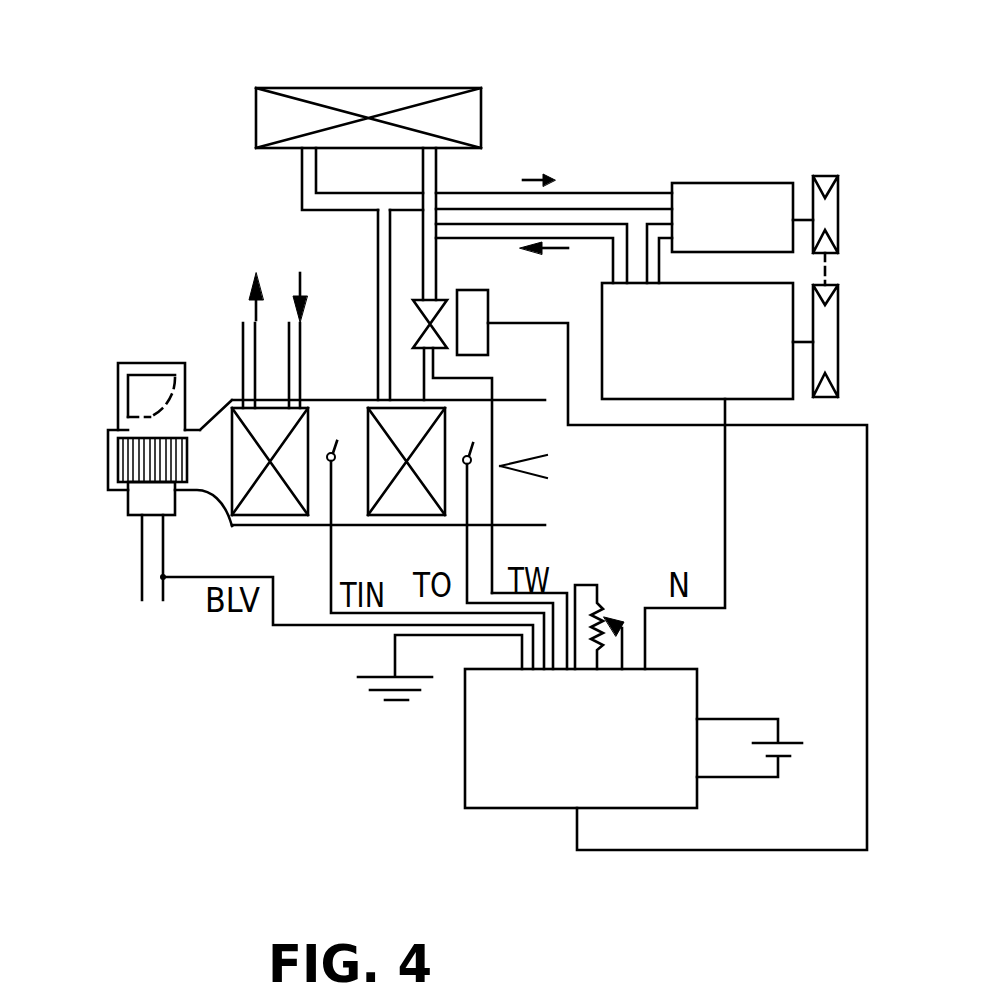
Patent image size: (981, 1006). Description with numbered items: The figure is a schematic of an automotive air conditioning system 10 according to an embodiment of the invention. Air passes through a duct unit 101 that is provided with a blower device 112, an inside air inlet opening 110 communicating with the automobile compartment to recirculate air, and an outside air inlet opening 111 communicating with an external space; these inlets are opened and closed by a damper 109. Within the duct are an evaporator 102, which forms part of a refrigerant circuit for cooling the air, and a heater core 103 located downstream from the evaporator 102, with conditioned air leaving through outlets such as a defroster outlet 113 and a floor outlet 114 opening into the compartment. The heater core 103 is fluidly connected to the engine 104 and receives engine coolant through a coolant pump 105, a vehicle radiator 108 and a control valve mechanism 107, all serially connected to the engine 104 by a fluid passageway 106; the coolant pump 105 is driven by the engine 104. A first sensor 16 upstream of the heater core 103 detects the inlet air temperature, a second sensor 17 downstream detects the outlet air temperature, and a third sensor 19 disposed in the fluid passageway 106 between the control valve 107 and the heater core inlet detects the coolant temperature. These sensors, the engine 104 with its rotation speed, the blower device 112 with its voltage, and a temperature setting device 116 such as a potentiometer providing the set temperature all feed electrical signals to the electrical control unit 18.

The air conditioning system 10 is at (547, 104).
The vehicle radiator 108 is at (310, 88).
The fluid passageway 106 is at (378, 254).
The control valve mechanism 107 is at (488, 310).
The third sensor 19 is at (435, 378).
The coolant pump 105 is at (713, 183).
The engine 104 is at (700, 283).
The duct unit 101 is at (318, 399).
The heater core 103 is at (368, 497).
The defroster outlet 113 is at (532, 428).
The floor outlet 114 is at (538, 505).
The outside air inlet opening 111 is at (147, 362).
The damper 109 is at (160, 371).
The inside air inlet opening 110 is at (118, 400).
The blower device 112 is at (118, 462).
The evaporator 102 is at (235, 515).
The first sensor 16 is at (431, 533).
The second sensor 17 is at (504, 532).
The temperature setting device 116 is at (608, 613).
The electrical control unit 18 is at (523, 808).